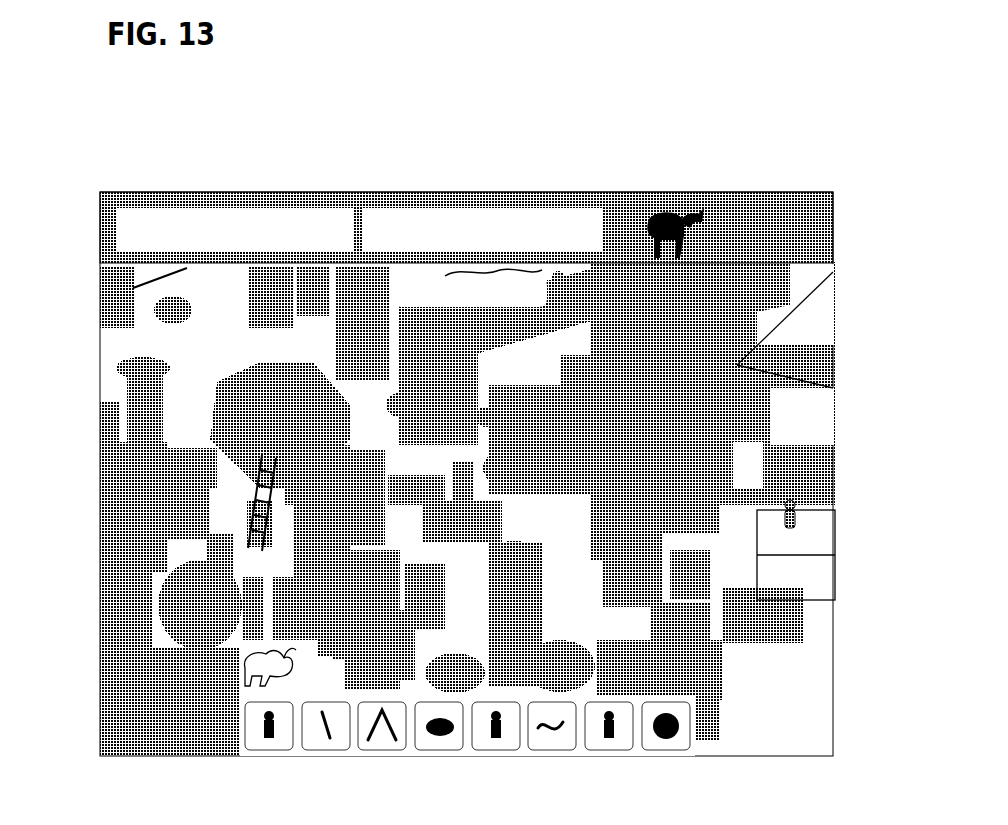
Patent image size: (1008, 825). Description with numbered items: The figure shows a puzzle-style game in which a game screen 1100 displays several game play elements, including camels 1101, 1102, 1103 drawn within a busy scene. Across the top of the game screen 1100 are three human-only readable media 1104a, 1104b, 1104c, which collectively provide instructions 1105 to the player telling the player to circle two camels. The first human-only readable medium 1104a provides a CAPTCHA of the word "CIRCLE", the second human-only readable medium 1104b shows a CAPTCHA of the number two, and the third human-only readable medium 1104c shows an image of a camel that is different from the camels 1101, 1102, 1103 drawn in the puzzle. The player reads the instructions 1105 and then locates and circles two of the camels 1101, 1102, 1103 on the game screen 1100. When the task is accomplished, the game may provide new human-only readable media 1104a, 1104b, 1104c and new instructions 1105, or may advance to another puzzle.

The game screen 1100 is at (203, 193).
The camel 1101 is at (250, 475).
The camel 1102 is at (796, 512).
The camel 1103 is at (233, 650).
The first human-only readable medium 1104a is at (250, 213).
The second human-only readable medium 1104b is at (423, 213).
The third human-only readable medium 1104c is at (668, 208).
The instructions 1105 is at (505, 150).